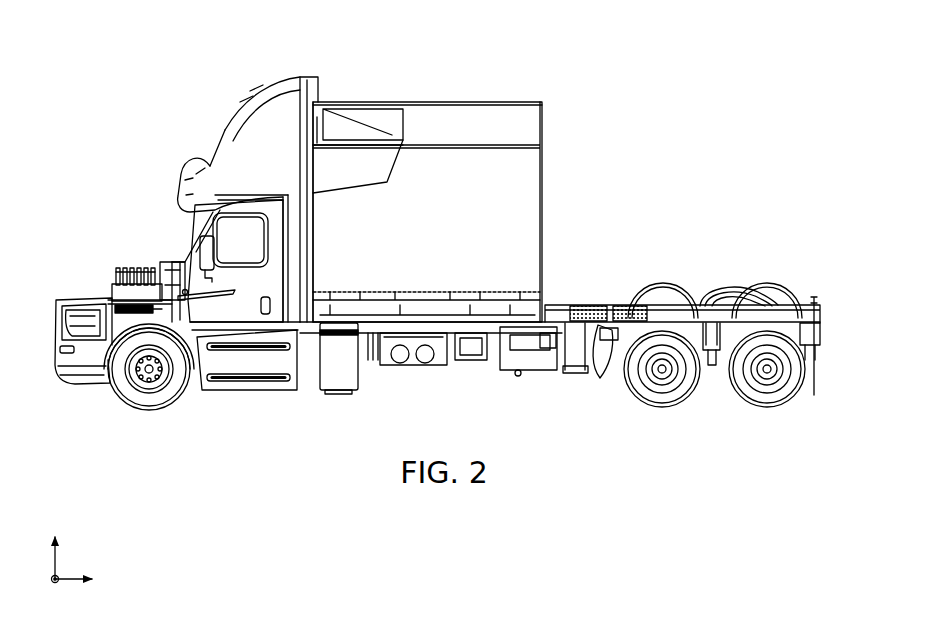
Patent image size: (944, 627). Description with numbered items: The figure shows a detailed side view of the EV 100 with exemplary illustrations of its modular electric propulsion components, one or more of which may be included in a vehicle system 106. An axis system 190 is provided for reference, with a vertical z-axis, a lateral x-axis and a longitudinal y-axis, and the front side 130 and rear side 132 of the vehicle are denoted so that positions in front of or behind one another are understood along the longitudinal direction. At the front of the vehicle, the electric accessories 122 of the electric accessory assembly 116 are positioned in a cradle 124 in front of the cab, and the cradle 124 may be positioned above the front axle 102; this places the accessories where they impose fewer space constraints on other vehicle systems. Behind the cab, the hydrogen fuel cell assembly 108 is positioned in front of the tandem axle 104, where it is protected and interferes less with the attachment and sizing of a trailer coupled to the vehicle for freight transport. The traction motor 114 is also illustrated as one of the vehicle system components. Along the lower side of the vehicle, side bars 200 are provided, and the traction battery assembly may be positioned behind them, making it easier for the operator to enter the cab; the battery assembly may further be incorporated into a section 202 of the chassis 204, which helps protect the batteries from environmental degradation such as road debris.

The EV 100 is at (88, 112).
The front axle 102 is at (148, 413).
The tandem axle 104 is at (688, 422).
The vehicle system 106 is at (421, 72).
The hydrogen fuel cell assembly 108 is at (423, 214).
The traction motor 114 is at (552, 308).
The electric accessory assembly 116 is at (128, 252).
The electric accessories 122 is at (110, 283).
The cradle 124 is at (80, 270).
The front side 130 is at (63, 298).
The rear side 132 is at (829, 311).
The axis system 190 is at (75, 545).
The side bars 200 is at (250, 398).
The section 202 is at (448, 337).
The chassis 204 is at (597, 298).